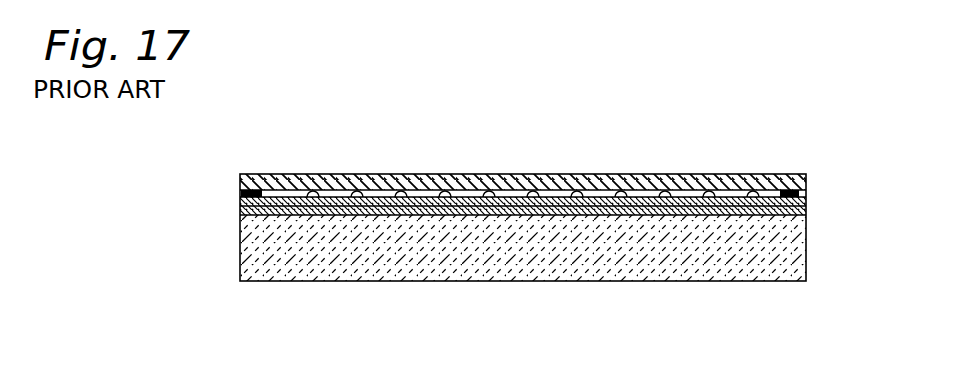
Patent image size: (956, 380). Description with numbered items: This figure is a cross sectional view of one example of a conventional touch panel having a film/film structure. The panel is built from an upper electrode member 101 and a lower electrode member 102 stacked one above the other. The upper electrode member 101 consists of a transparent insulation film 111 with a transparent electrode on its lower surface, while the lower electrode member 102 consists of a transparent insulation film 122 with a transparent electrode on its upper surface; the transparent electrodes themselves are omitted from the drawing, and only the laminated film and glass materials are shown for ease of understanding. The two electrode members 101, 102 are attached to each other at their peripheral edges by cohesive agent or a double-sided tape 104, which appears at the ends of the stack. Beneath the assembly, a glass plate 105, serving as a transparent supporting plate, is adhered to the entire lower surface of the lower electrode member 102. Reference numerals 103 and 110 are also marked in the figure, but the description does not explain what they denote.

The upper electrode member 101 is at (768, 163).
The lower electrode member 102 is at (810, 208).
The photoelectric conversion elements / bumps 103 is at (490, 198).
The double-sided tape 104 is at (251, 190).
The glass plate 105 is at (432, 285).
The lower thin-film layer 110 is at (240, 208).
The transparent insulation film 111 is at (408, 175).
The transparent insulation film 122 is at (737, 205).